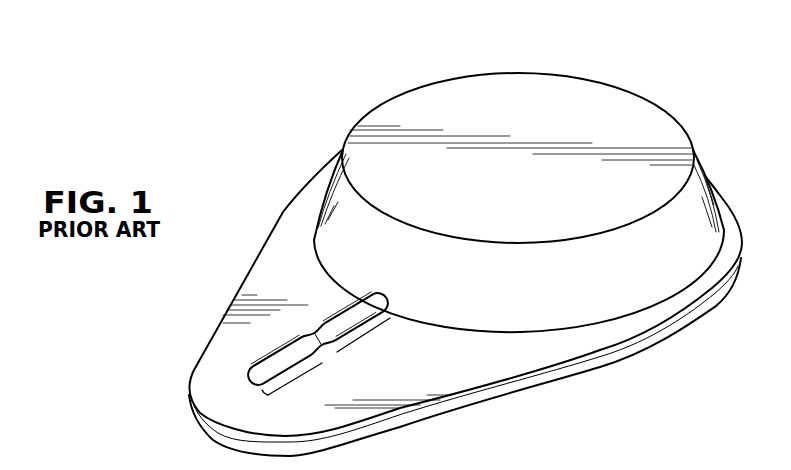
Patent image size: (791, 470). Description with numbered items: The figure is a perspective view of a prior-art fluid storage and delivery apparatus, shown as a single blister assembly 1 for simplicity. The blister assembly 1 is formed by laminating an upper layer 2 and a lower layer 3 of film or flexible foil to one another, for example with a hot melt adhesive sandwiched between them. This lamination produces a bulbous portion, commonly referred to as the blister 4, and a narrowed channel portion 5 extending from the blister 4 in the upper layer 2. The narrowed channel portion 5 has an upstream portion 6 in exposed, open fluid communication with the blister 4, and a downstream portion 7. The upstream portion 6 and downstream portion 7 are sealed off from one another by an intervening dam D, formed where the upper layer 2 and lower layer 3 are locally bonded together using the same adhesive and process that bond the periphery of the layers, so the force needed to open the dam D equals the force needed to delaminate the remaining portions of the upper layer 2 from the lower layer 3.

The blister assembly 1 is at (624, 58).
The upper layer 2 is at (551, 357).
The lower layer 3 is at (536, 380).
The blister 4 is at (478, 96).
The narrowed channel portion 5 is at (272, 348).
The upstream portion 6 is at (362, 335).
The downstream portion 7 is at (297, 380).
The dam D is at (321, 349).